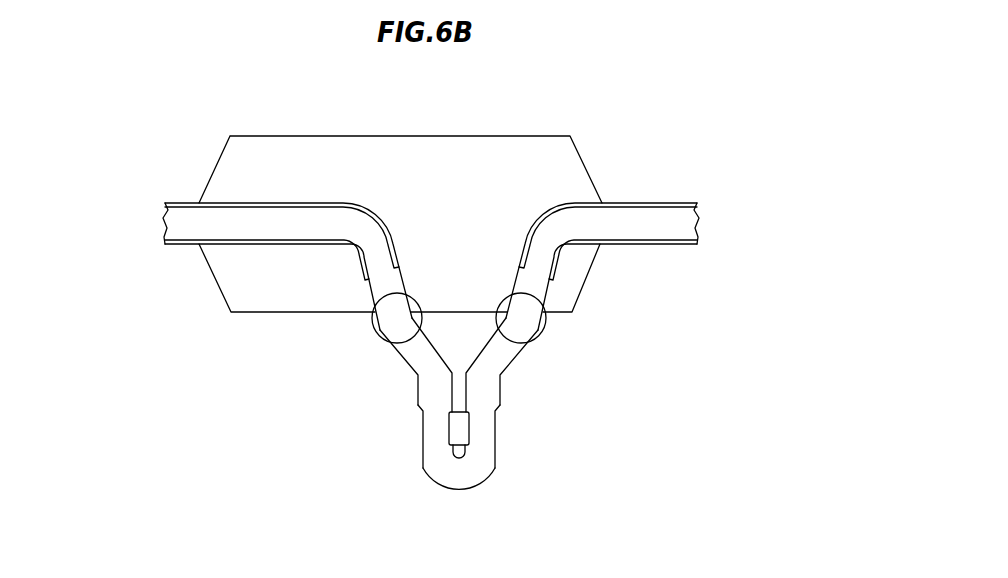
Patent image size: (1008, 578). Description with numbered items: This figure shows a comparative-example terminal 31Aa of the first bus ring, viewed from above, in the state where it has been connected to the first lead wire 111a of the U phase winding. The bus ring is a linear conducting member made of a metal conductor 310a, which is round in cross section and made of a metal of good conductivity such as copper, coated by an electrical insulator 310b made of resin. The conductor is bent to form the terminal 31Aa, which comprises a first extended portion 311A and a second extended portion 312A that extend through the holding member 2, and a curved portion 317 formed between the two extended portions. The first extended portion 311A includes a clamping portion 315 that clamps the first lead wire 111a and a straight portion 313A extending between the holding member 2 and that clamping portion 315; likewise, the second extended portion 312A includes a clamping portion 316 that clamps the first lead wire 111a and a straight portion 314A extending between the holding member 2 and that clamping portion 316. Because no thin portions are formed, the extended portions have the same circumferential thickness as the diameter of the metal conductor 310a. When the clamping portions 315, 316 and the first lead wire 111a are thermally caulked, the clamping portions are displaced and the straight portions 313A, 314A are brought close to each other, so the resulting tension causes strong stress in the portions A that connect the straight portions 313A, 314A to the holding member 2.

The holding member 2 is at (410, 152).
The metal conductor 310a is at (682, 218).
The electrical insulator 310b is at (632, 202).
The portions connecting the straight portions and the holding member A is at (501, 303).
The first extended portion 311A is at (358, 393).
The second extended portion 312A is at (557, 393).
The straight portion 313A is at (417, 348).
The straight portion 314A is at (510, 348).
The clamping portion 315 is at (435, 430).
The clamping portion 316 is at (490, 427).
The curved portion 317 is at (455, 480).
The first lead wire 111a is at (457, 430).
The terminal 31Aa is at (456, 428).